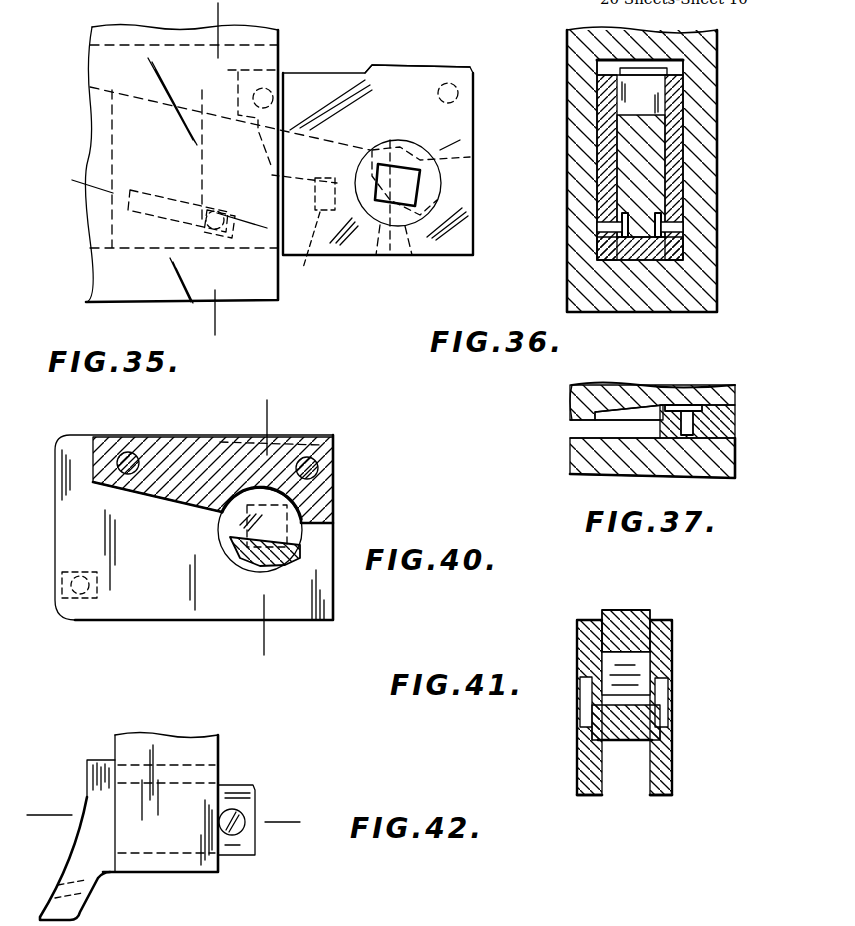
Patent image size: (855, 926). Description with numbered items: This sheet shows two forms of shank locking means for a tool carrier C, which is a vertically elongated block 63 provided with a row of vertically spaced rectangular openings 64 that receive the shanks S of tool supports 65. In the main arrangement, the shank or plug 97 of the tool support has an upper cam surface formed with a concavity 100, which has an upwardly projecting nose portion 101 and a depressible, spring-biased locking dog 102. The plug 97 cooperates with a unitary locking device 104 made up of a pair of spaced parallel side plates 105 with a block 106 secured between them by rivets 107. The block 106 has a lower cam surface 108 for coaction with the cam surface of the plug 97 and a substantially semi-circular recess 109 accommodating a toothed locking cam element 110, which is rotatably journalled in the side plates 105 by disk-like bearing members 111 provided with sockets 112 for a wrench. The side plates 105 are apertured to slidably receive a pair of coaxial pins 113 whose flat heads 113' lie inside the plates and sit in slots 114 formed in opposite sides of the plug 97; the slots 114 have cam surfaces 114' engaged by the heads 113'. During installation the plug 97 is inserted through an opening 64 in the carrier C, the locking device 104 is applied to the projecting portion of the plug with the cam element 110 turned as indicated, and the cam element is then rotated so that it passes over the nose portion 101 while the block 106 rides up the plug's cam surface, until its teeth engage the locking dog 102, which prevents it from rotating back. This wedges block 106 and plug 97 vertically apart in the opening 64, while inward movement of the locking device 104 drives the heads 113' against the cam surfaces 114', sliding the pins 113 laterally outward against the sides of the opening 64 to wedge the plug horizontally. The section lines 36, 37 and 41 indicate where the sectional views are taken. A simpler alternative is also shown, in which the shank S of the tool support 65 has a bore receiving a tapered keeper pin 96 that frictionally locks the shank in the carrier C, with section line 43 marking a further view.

In FIG. 35, the section line 36— 36 is at (205, 18).
In FIG. 35, the section line 37— 37 is at (84, 172).
In FIG. 40, the section line 41— 41 is at (278, 418).
In FIG. 42, the section line 43— 43 is at (43, 800).
In FIG. 35, the vertically elongated block 63 is at (173, 295).
In FIG. 36, the vertically elongated block 63 is at (718, 186).
In FIG. 37, the vertically elongated block 63 is at (727, 460).
In FIG. 42, the vertically elongated block 63 is at (186, 752).
In FIG. 36, the rectangular openings 64 is at (652, 101).
In FIG. 41, the rectangular openings 64 is at (626, 673).
In FIG. 42, the rectangular openings 64 is at (158, 855).
In FIG. 42, the tool support 65 is at (86, 768).
In FIG. 42, the keeper pin 96 is at (233, 836).
In FIG. 35, the shank or plug 97 is at (130, 95).
In FIG. 36, the shank or plug 97 is at (643, 197).
In FIG. 37, the shank or plug 97 is at (652, 395).
In FIG. 35, the concavity 100 is at (272, 170).
In FIG. 35, the nose portion 101 is at (381, 154).
In FIG. 35, the locking dog 102 is at (377, 280).
In FIG. 35, the locking device 104 is at (480, 55).
In FIG. 40, the locking device 104 is at (366, 420).
In FIG. 41, the locking device 104 is at (676, 632).
In FIG. 35, the side plates 105 is at (456, 145).
In FIG. 36, the side plates 105 is at (612, 156).
In FIG. 37, the side plates 105 is at (732, 432).
In FIG. 40, the side plates 105 is at (285, 608).
In FIG. 41, the side plates 105 is at (664, 797).
In FIG. 35, the block 106 is at (414, 72).
In FIG. 36, the block 106 is at (648, 98).
In FIG. 40, the block 106 is at (183, 460).
In FIG. 41, the block 106 is at (630, 632).
In FIG. 40, the rivets 107 is at (128, 452).
In FIG. 40, the lower cam surface 108 is at (168, 508).
In FIG. 40, the semi-circular recess 109 is at (305, 511).
In FIG. 35, the toothed locking cam element 110 is at (474, 158).
In FIG. 40, the toothed locking cam element 110 is at (282, 545).
In FIG. 41, the toothed locking cam element 110 is at (656, 705).
In FIG. 35, the disk-like bearing members 111 is at (406, 226).
In FIG. 41, the disk-like bearing members 111 is at (586, 740).
In FIG. 35, the sockets 112 is at (422, 188).
In FIG. 40, the sockets 112 is at (230, 529).
In FIG. 41, the sockets 112 is at (668, 715).
In FIG. 35, the coaxial pins 113 is at (238, 212).
In FIG. 36, the coaxial pins 113 is at (682, 230).
In FIG. 37, the coaxial pins 113 is at (718, 437).
In FIG. 40, the coaxial pins 113 is at (76, 609).
In FIG. 35, the flat heads 113' is at (319, 223).
In FIG. 36, the flat heads 113' is at (632, 287).
In FIG. 35, the slots 114 is at (178, 198).
In FIG. 36, the slots 114 is at (573, 263).
In FIG. 37, the slots 114 is at (704, 382).
In FIG. 37, the cam surfaces 114' is at (629, 388).
In FIG. 35, the tool carrier C is at (84, 287).
In FIG. 36, the tool carrier C is at (720, 125).
In FIG. 42, the tool carrier C is at (224, 750).
In FIG. 42, the shank S is at (258, 786).